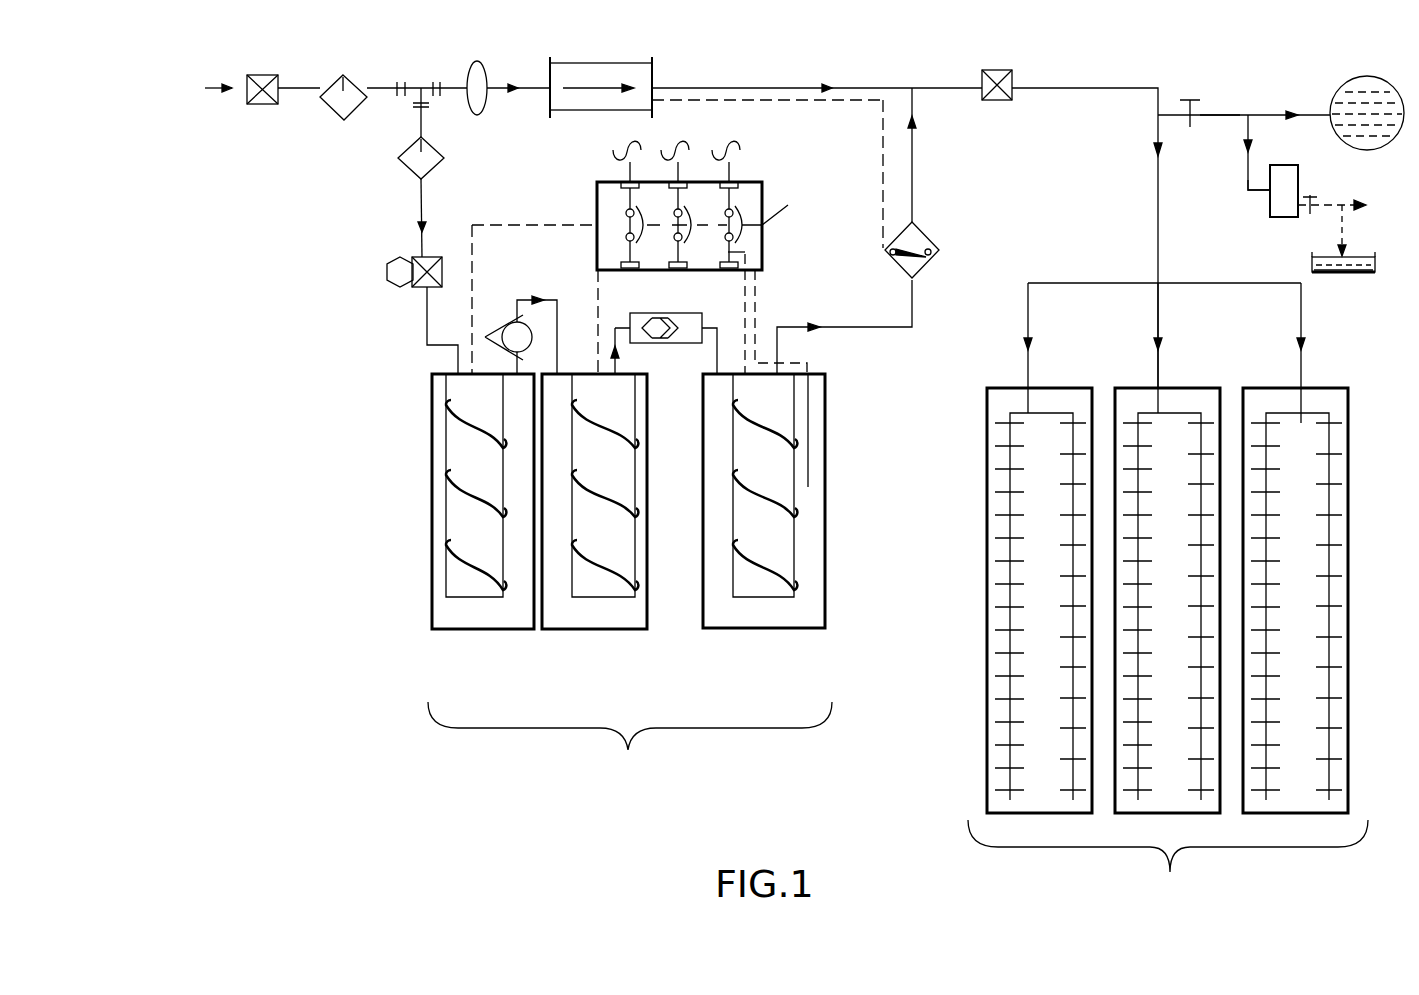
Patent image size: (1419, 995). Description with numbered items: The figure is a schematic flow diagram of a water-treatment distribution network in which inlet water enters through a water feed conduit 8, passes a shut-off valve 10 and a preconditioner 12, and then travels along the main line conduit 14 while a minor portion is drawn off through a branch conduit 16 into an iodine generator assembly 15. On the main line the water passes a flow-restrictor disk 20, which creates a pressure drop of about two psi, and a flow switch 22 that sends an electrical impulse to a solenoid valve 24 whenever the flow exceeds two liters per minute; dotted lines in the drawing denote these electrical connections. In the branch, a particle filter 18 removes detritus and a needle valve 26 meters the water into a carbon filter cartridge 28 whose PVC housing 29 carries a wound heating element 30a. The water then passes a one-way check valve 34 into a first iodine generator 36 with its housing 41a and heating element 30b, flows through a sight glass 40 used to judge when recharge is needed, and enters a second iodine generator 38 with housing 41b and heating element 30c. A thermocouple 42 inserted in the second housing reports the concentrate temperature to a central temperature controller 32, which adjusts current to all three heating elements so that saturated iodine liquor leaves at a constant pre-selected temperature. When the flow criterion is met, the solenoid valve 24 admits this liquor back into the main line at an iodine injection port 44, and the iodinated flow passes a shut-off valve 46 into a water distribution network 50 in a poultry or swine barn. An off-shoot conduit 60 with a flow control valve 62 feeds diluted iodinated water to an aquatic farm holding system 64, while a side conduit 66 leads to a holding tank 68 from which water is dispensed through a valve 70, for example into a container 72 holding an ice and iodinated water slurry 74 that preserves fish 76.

The water feed conduit 8 is at (208, 90).
The shut-off valve 10 is at (268, 104).
The preconditioner 12 is at (333, 118).
The main line conduit 14 is at (393, 85).
The iodine generator assembly 15 is at (630, 746).
The branch conduit 16 is at (427, 330).
The particle filter 18 is at (400, 172).
The flow-restrictor disk 20 is at (487, 78).
The flow switch 22 is at (626, 72).
The solenoid valve 24 is at (940, 238).
The needle valve 26 is at (387, 270).
The carbon filter cartridge 28 is at (446, 580).
The PVC housing 29 is at (432, 612).
The heating element 30a is at (503, 592).
The heating element 30b is at (572, 562).
The heating element 30c is at (733, 550).
The central temperature controller 32 is at (597, 196).
The one-way check valve 34 is at (500, 326).
The first iodine generator 36 is at (610, 598).
The second iodine generator 38 is at (768, 598).
The sight glass 40 is at (690, 313).
The housing 41a is at (647, 618).
The housing 41b is at (825, 618).
The thermocouple 42 is at (810, 452).
The iodine injection port 44 is at (910, 86).
The shut-off valve 46 is at (1000, 70).
The water distribution network 50 is at (1168, 596).
The off-shoot conduit 60 is at (1212, 113).
The flow control valve 62 is at (1190, 120).
The aquatic farm holding system 64 is at (1340, 86).
The side conduit 66 is at (1245, 190).
The holding tank 68 is at (1283, 218).
The valve 70 is at (1312, 203).
The container 72 is at (1375, 268).
The ice/iodinated water slurry 74 is at (1372, 256).
The fish 76 is at (1322, 274).